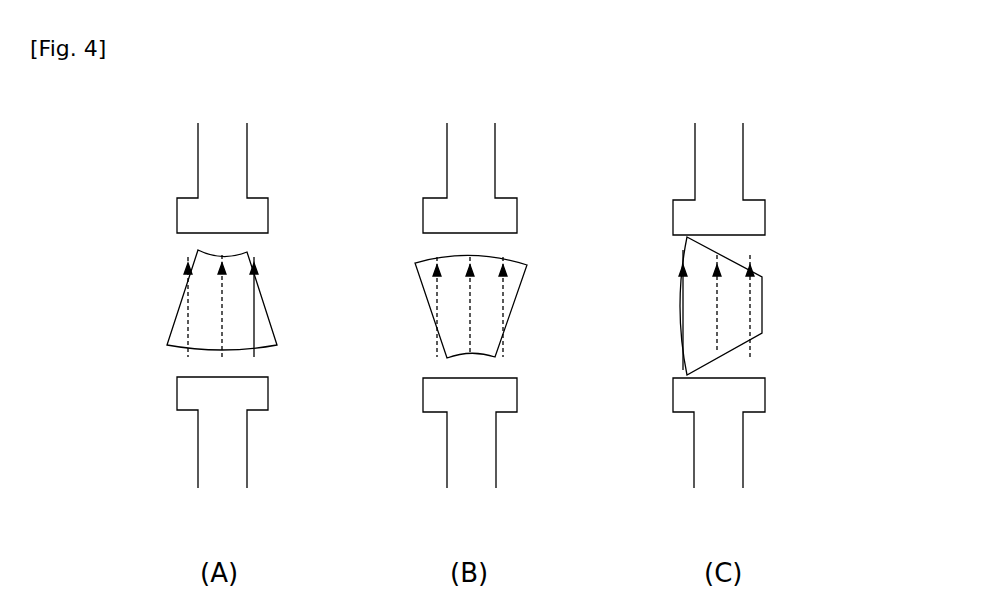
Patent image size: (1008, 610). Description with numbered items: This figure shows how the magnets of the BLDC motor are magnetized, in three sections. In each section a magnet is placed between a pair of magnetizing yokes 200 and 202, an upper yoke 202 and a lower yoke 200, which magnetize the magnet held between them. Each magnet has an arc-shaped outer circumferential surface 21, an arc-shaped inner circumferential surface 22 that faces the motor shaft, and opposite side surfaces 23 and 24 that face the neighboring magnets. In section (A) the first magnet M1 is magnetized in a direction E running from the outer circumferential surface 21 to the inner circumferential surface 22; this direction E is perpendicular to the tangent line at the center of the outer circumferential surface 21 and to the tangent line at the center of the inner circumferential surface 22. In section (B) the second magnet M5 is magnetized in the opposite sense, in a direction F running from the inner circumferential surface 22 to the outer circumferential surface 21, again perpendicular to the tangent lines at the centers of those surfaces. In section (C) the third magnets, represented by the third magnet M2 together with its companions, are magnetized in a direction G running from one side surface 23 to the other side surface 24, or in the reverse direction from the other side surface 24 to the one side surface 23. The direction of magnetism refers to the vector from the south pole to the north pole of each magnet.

The magnetizing yoke 202 is at (208, 152).
The magnetizing yoke 200 is at (210, 452).
The outer circumferential surface 21 is at (247, 352).
The inner circumferential surface 22 is at (237, 253).
The one side surface 23 is at (271, 325).
The other side surface 24 is at (180, 295).
The magnetization direction E is at (222, 303).
The magnetization direction F is at (512, 308).
The magnetization direction G is at (717, 292).
The first magnet M1 is at (172, 330).
The second magnet M5 is at (473, 305).
The third magnet M2 is at (687, 375).